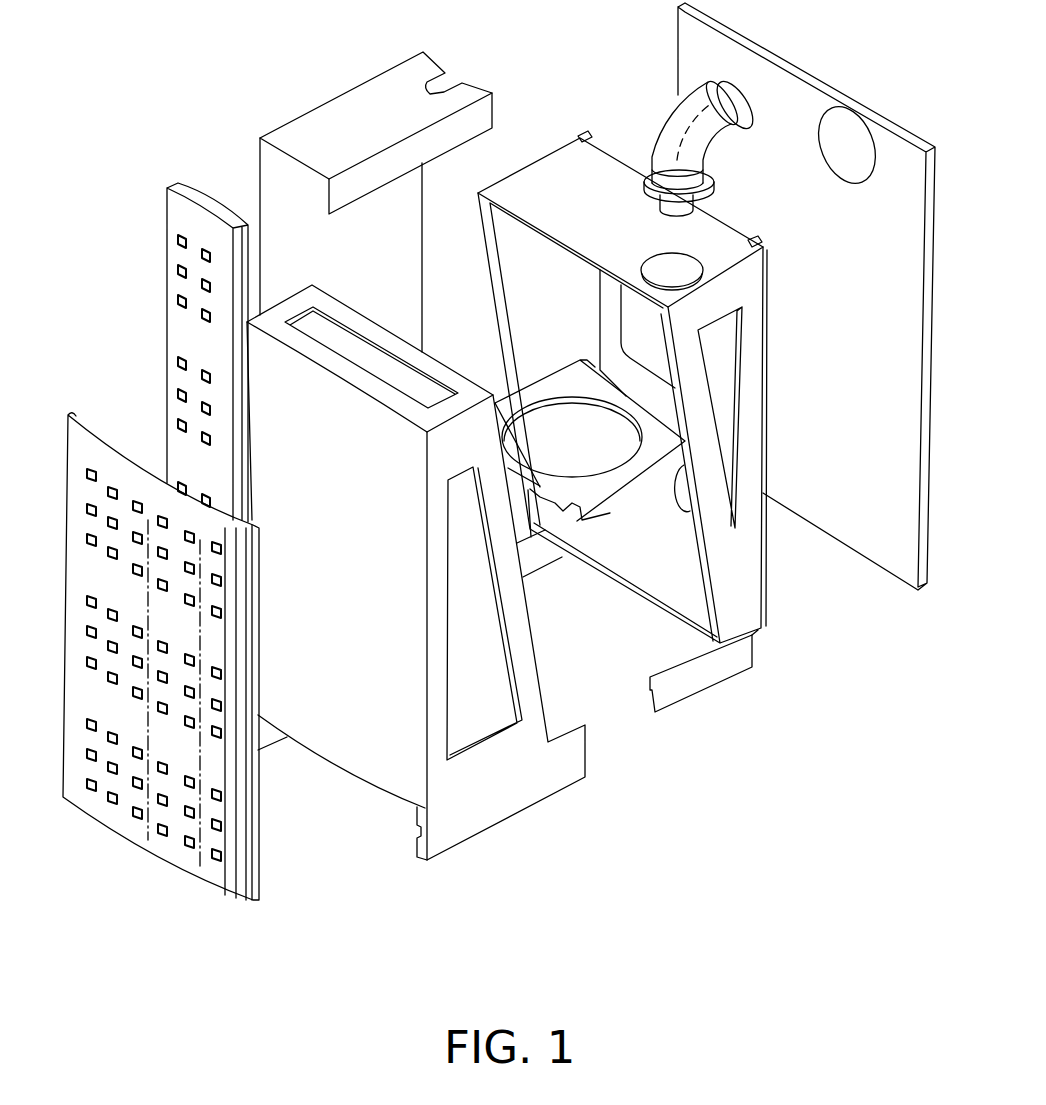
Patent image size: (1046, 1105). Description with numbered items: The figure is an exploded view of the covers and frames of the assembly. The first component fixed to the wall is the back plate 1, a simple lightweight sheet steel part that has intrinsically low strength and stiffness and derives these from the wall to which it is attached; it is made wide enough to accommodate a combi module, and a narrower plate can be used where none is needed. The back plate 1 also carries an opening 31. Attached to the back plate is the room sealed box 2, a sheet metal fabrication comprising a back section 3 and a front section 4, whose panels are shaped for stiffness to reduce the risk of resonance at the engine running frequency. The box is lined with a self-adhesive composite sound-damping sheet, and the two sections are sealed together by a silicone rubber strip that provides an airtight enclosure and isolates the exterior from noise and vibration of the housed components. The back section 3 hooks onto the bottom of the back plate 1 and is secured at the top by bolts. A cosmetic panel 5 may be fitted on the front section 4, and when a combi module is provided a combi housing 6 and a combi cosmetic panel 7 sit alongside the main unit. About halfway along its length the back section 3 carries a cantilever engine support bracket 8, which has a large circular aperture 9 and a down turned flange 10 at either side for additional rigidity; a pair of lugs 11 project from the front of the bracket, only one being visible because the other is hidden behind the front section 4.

The back plate 1 is at (856, 412).
The room sealed box 2 is at (657, 765).
The back section 3 is at (742, 557).
The opening in rear panel 31 is at (848, 127).
The front section 4 is at (498, 793).
The cosmetic panel 5 is at (180, 853).
The combi housing 6 is at (318, 123).
The combi cosmetic panel 7 is at (185, 333).
The cantilever engine support bracket 8 is at (604, 507).
The large circular aperture 9 is at (567, 417).
The down turned flange 10 is at (650, 482).
The lugs 11 is at (540, 505).